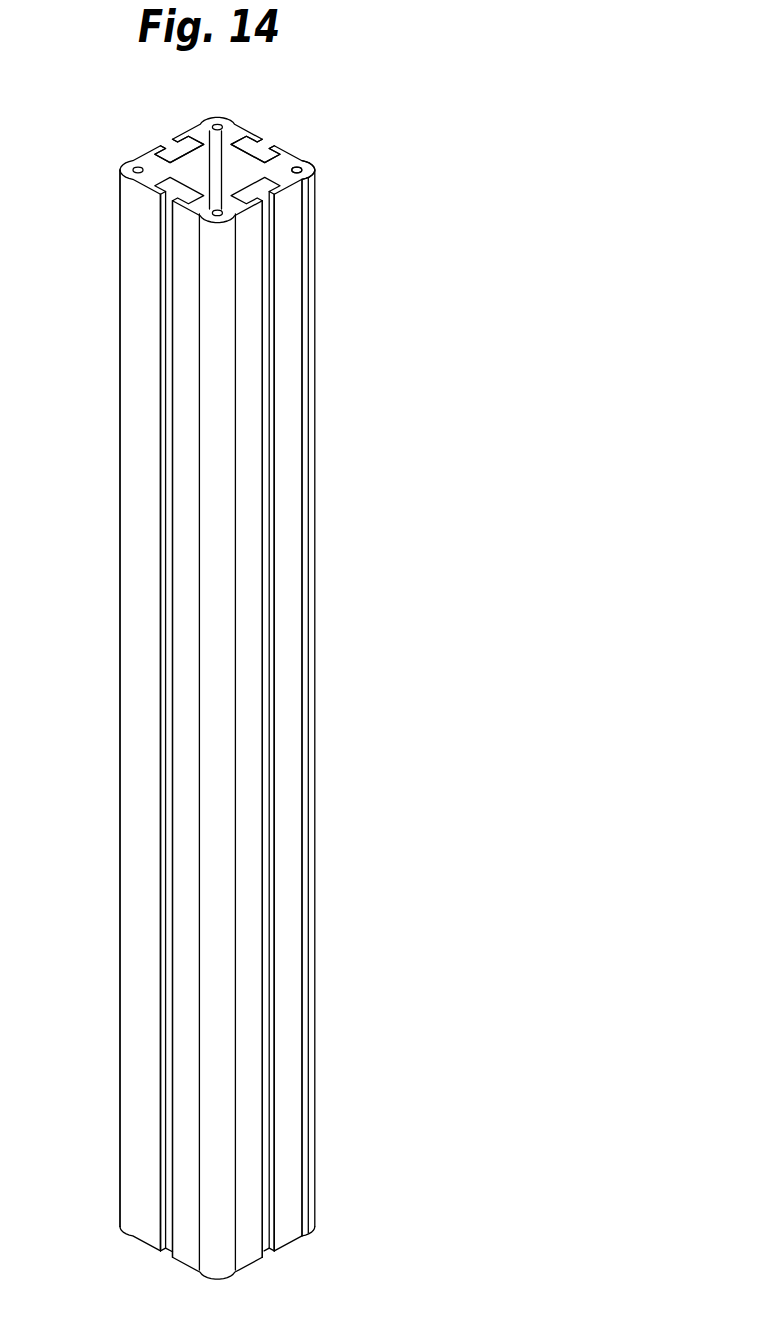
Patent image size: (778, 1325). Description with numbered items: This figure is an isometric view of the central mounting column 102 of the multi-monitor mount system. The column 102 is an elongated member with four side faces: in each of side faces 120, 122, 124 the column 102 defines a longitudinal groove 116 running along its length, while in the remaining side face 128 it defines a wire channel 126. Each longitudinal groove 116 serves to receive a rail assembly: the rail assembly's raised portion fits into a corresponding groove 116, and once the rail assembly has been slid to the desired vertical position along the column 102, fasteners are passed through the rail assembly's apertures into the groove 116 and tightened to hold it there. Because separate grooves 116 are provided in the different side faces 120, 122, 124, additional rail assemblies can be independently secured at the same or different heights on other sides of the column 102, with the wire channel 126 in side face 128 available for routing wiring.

The central mounting column 102 is at (339, 661).
The longitudinal groove 116 is at (162, 144).
The side face 120 is at (179, 139).
The side face 122 is at (140, 372).
The side face 124 is at (287, 453).
The wire channel 126 is at (268, 148).
The side face 128 is at (293, 157).